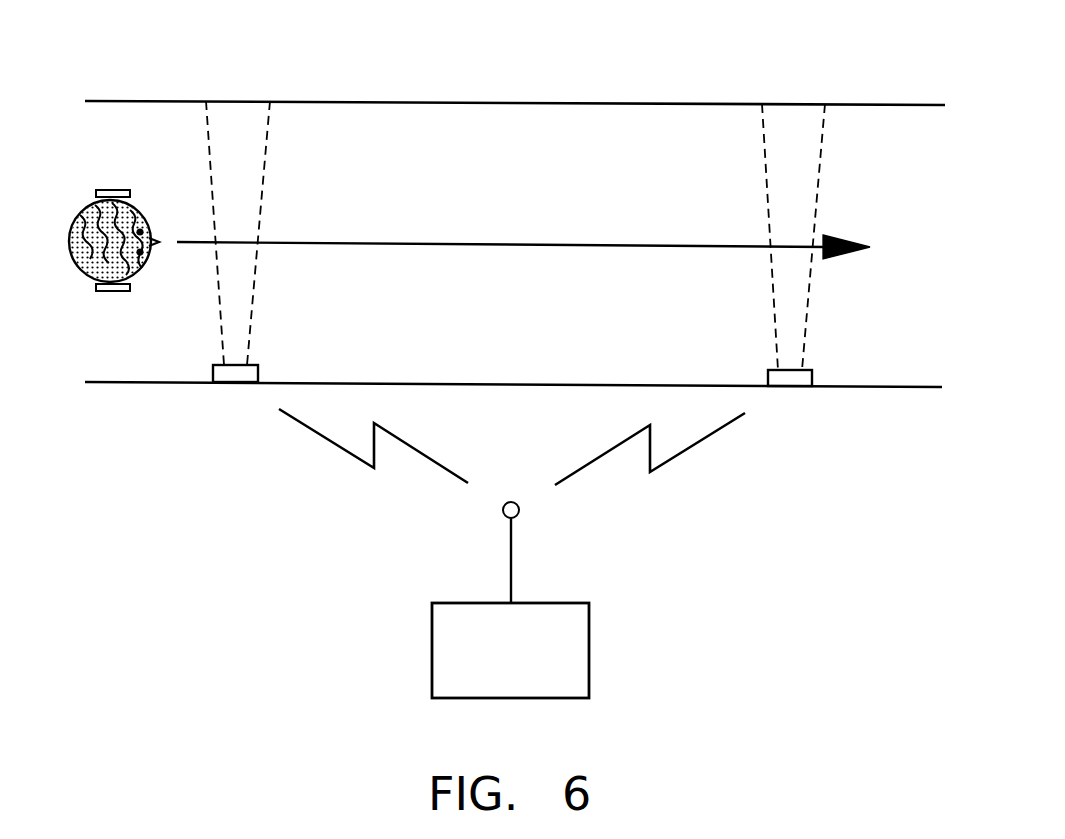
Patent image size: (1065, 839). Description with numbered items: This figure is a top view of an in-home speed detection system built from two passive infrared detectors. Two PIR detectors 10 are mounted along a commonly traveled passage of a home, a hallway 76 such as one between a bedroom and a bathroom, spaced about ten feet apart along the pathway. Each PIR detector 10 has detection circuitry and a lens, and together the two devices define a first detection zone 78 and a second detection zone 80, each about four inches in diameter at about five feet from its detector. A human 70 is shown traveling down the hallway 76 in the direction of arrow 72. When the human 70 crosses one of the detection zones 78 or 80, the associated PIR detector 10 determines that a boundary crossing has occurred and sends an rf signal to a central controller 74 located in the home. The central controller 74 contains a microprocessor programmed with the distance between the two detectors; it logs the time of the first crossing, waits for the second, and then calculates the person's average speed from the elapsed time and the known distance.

The PIR detector 10 is at (235, 383).
The human 70 is at (142, 218).
The arrow 72 is at (525, 242).
The central controller 74 is at (568, 653).
The hallway 76 is at (517, 102).
The first detection zone 78 is at (257, 127).
The second detection zone 80 is at (812, 132).